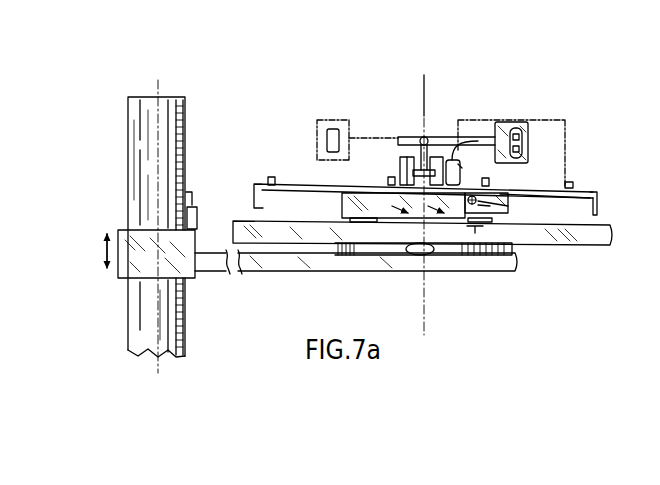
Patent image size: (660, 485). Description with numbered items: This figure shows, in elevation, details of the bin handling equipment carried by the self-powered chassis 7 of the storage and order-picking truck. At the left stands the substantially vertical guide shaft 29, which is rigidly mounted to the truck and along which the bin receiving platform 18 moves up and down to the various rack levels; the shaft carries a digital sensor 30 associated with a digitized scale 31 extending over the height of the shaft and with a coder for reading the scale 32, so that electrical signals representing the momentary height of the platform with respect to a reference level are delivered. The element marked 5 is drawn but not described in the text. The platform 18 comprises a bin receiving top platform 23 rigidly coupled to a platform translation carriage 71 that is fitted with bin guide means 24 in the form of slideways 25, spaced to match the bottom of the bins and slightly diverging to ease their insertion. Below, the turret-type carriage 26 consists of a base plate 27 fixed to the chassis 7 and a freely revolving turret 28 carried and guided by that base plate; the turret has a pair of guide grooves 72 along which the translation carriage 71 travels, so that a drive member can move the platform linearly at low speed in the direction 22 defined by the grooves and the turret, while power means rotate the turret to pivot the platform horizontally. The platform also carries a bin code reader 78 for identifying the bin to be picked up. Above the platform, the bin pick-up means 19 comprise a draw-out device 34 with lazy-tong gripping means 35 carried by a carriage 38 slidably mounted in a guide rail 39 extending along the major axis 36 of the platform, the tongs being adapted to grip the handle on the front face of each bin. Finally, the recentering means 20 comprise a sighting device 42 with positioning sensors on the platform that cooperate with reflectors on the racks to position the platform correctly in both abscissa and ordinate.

The post 5 is at (207, 140).
The self-powered chassis 7 is at (178, 338).
The bin receiving platform 18 is at (300, 172).
The bin pick-up means 19 is at (411, 126).
The recentering means 20 is at (548, 198).
The direction 22 is at (412, 225).
The bin receiving top platform 23 is at (598, 192).
The bin guide means 24 is at (570, 182).
The slideways 25 is at (270, 176).
The turret-type carriage 26 is at (524, 256).
The base plate 27 is at (490, 272).
The turret 28 is at (553, 246).
The guide shaft 29 is at (165, 163).
The digital sensor 30 is at (188, 194).
The digitized scale 31 is at (180, 308).
The coder for reading the scale 32 is at (197, 220).
The draw-out device 34 is at (524, 140).
The lazy-tong gripping means 35 is at (520, 122).
The major axis 36 is at (409, 126).
The carriage 38 is at (402, 158).
The guide rail 39 is at (452, 158).
The sighting device 42 is at (488, 204).
The platform translation carriage 71 is at (345, 204).
The guide grooves 72 is at (476, 230).
The bin code reader 78 is at (460, 178).